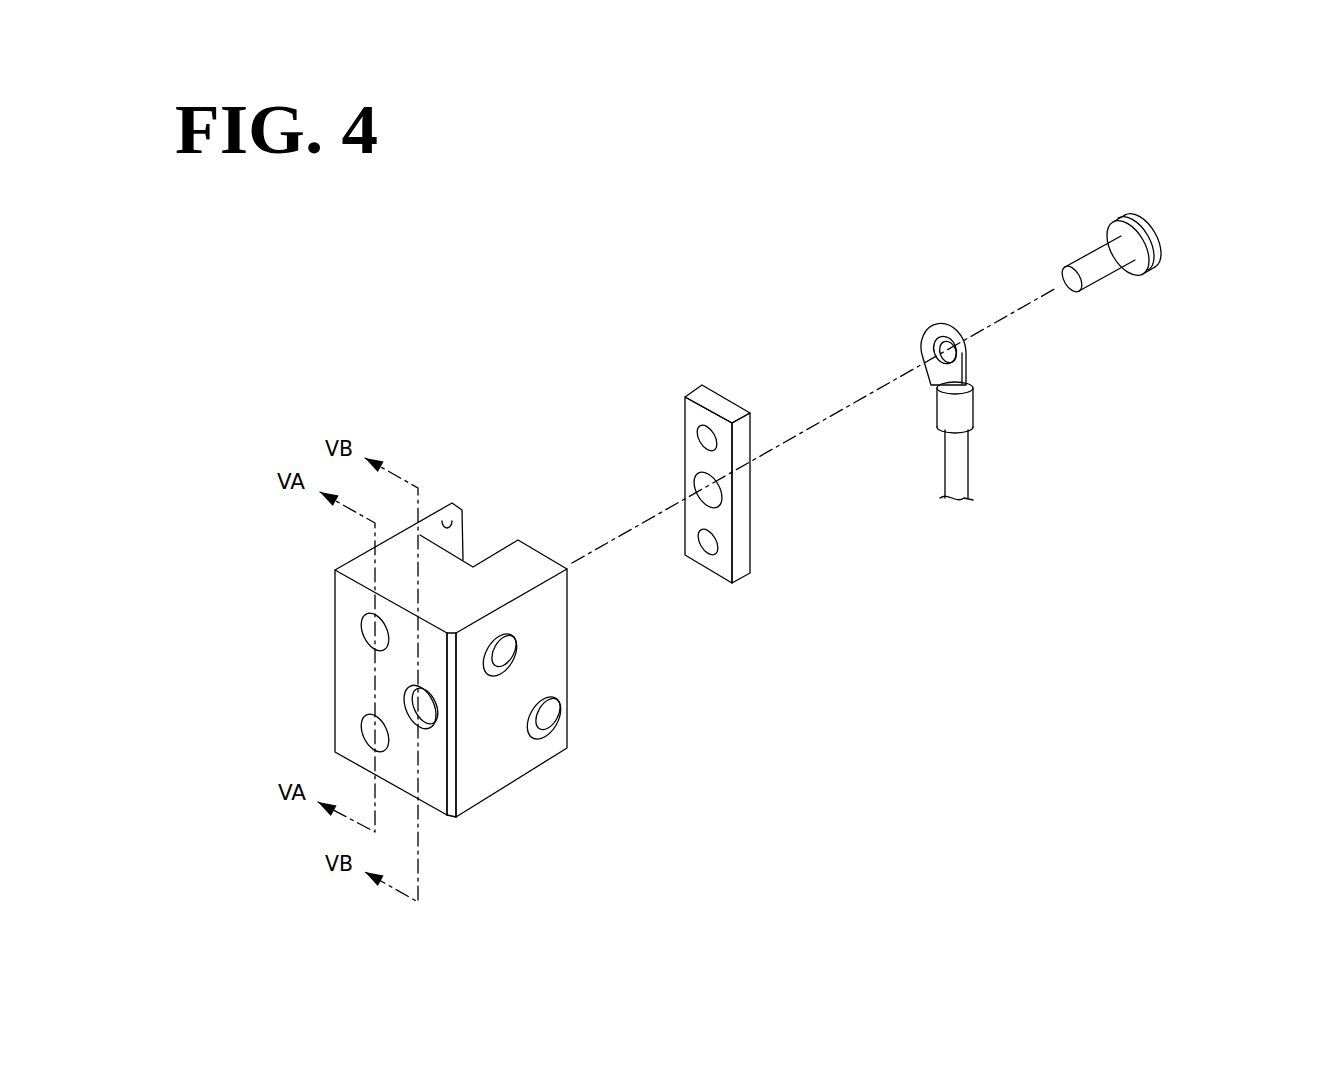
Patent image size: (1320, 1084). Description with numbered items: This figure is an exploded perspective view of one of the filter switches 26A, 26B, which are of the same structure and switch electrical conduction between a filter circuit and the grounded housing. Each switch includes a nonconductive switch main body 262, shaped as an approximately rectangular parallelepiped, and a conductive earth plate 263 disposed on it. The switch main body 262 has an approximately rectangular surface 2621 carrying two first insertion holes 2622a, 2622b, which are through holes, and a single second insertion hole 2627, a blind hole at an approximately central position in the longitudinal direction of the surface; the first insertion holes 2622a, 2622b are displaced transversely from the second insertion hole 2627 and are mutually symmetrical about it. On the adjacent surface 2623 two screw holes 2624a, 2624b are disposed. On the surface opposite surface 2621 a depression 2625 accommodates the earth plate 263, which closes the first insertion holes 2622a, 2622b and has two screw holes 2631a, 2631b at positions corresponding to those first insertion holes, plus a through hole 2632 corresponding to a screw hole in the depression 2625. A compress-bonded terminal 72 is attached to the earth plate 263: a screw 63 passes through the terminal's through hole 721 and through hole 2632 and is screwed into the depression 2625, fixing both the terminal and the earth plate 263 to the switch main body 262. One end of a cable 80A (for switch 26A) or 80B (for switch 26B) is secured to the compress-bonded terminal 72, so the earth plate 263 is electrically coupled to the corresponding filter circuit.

The filter switch 26A is at (713, 524).
The filter switch 26B is at (611, 287).
The switch main body 262 is at (543, 499).
The surface 2621 is at (350, 668).
The first insertion hole 2622a is at (362, 625).
The first insertion hole 2622b is at (362, 726).
The surface 2623 is at (553, 606).
The screw hole 2624a is at (505, 652).
The screw hole 2624b is at (549, 716).
The depression 2625 is at (450, 512).
The second insertion hole 2627 is at (428, 722).
The earth plate 263 is at (748, 381).
The screw hole 2631a is at (713, 440).
The screw hole 2631b is at (713, 545).
The through hole 2632 is at (716, 487).
The compress-bonded terminal 72 is at (961, 320).
The through hole 721 is at (950, 352).
The cable 80A is at (1036, 465).
The cable 80B is at (962, 465).
The screw 63 is at (1152, 232).